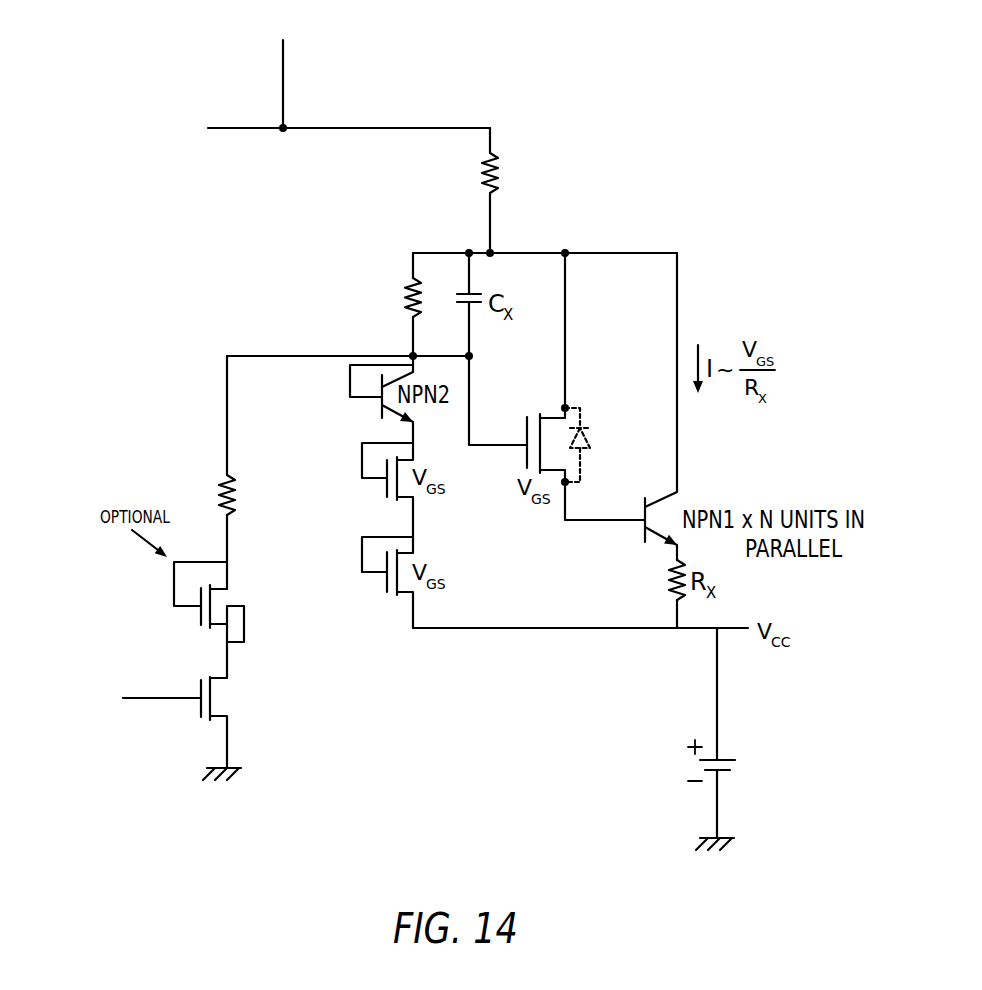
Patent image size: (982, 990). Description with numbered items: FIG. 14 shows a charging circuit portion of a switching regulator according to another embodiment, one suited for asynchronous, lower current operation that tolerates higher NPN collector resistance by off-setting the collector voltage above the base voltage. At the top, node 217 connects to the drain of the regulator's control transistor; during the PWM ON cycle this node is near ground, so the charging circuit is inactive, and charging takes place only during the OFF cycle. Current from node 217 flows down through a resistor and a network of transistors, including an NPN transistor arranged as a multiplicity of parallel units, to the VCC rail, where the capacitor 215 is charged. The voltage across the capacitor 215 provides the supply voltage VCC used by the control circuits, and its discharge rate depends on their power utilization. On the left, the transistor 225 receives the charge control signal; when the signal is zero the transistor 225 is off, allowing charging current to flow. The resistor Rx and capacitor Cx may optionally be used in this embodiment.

The node 217 is at (286, 126).
The capacitor 215 is at (737, 762).
The transistor 225 is at (221, 690).